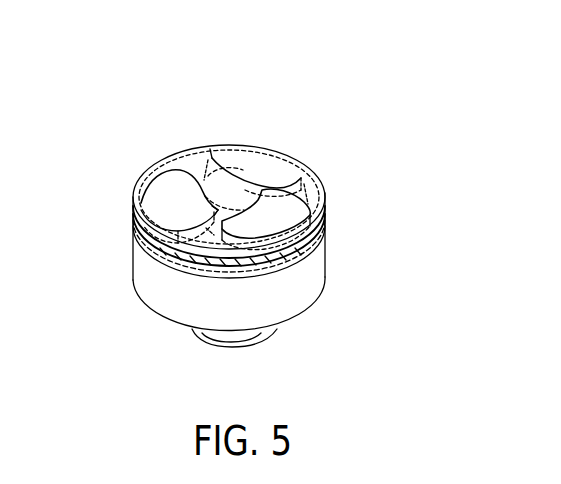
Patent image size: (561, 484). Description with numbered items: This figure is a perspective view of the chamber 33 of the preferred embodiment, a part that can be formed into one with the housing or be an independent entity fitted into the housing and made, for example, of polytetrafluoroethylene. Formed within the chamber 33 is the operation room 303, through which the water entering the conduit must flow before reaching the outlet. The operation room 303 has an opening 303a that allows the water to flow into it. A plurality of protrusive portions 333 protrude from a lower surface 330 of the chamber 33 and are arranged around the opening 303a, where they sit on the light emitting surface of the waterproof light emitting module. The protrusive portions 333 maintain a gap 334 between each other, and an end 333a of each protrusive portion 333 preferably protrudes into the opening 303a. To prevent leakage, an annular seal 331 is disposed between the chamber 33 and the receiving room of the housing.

The chamber 33 is at (315, 268).
The lower surface 330 is at (322, 193).
The annular seal 331 is at (322, 238).
The protrusive portion 333 is at (162, 182).
The end of protrusive portion 333a is at (218, 210).
The gap 334 is at (198, 186).
The operation room 303 is at (228, 202).
The opening 303a is at (200, 182).